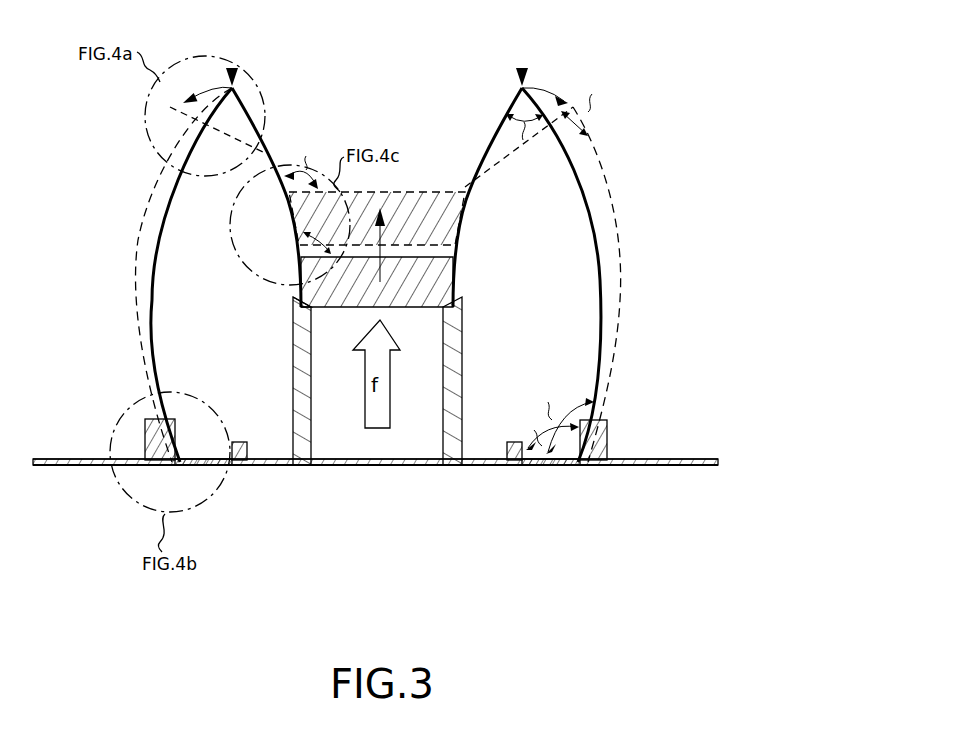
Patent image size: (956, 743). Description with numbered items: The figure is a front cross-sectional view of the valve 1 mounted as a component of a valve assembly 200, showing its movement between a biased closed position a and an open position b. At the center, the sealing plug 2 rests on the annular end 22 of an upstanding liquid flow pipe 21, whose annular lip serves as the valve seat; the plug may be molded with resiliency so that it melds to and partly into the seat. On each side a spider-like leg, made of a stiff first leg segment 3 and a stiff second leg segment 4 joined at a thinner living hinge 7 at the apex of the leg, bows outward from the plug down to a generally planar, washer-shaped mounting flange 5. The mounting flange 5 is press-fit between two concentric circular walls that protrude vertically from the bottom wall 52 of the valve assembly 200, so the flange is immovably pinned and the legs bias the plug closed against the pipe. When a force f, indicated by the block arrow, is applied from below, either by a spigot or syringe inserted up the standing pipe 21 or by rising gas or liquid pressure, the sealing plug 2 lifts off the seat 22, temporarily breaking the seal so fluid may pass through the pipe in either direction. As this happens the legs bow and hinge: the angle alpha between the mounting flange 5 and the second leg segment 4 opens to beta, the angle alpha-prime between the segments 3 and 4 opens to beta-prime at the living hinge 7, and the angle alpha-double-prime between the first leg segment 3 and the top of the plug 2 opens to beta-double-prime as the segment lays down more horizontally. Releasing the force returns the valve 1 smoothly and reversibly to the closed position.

The valve 1 is at (654, 64).
The sealing plug 2 is at (312, 290).
The first leg segment 3 is at (255, 122).
The second leg segment 4 is at (152, 305).
The mounting flange 5 is at (200, 466).
The living hinge 7 is at (232, 69).
The liquid flow pipe 21 is at (293, 410).
The annular end 22 is at (316, 316).
The bottom wall 52 is at (485, 466).
The valve assembly 200 is at (661, 378).